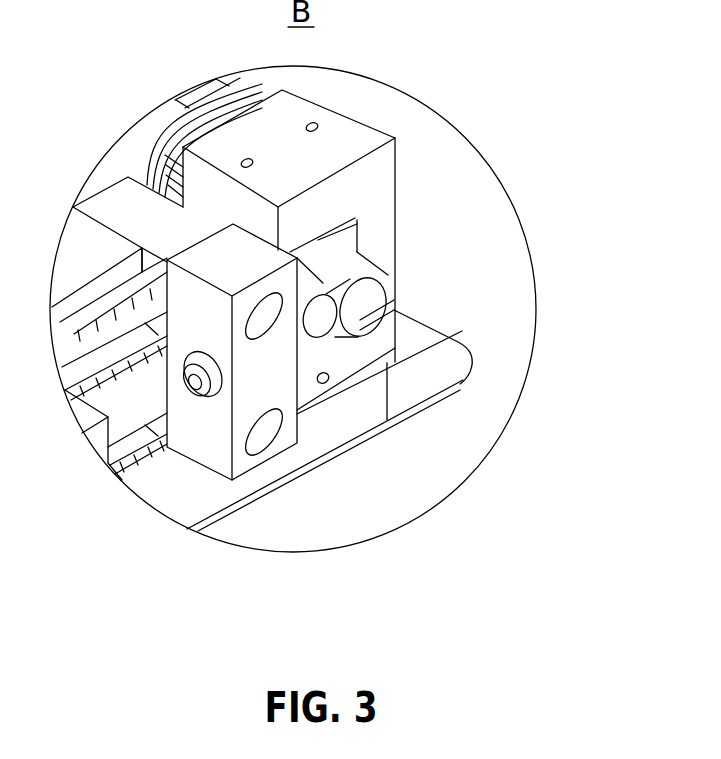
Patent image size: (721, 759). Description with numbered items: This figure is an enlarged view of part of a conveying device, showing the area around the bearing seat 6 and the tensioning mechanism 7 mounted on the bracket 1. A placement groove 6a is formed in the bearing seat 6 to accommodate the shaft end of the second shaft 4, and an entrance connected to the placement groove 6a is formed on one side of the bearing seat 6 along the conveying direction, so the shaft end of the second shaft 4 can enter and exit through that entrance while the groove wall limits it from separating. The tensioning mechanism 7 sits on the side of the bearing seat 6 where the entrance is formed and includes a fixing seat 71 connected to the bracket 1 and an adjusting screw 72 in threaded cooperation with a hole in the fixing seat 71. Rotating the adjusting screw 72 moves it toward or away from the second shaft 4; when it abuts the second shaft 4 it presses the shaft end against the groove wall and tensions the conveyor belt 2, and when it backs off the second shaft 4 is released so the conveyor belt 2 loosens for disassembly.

The bracket 1 is at (197, 505).
The conveyor belt 2 is at (155, 126).
The second shaft 4 is at (372, 317).
The bearing seat 6 is at (398, 218).
The placement groove 6a is at (372, 236).
The tensioning mechanism 7 is at (321, 436).
The fixing seat 71 is at (243, 460).
The adjusting screw 72 is at (313, 322).